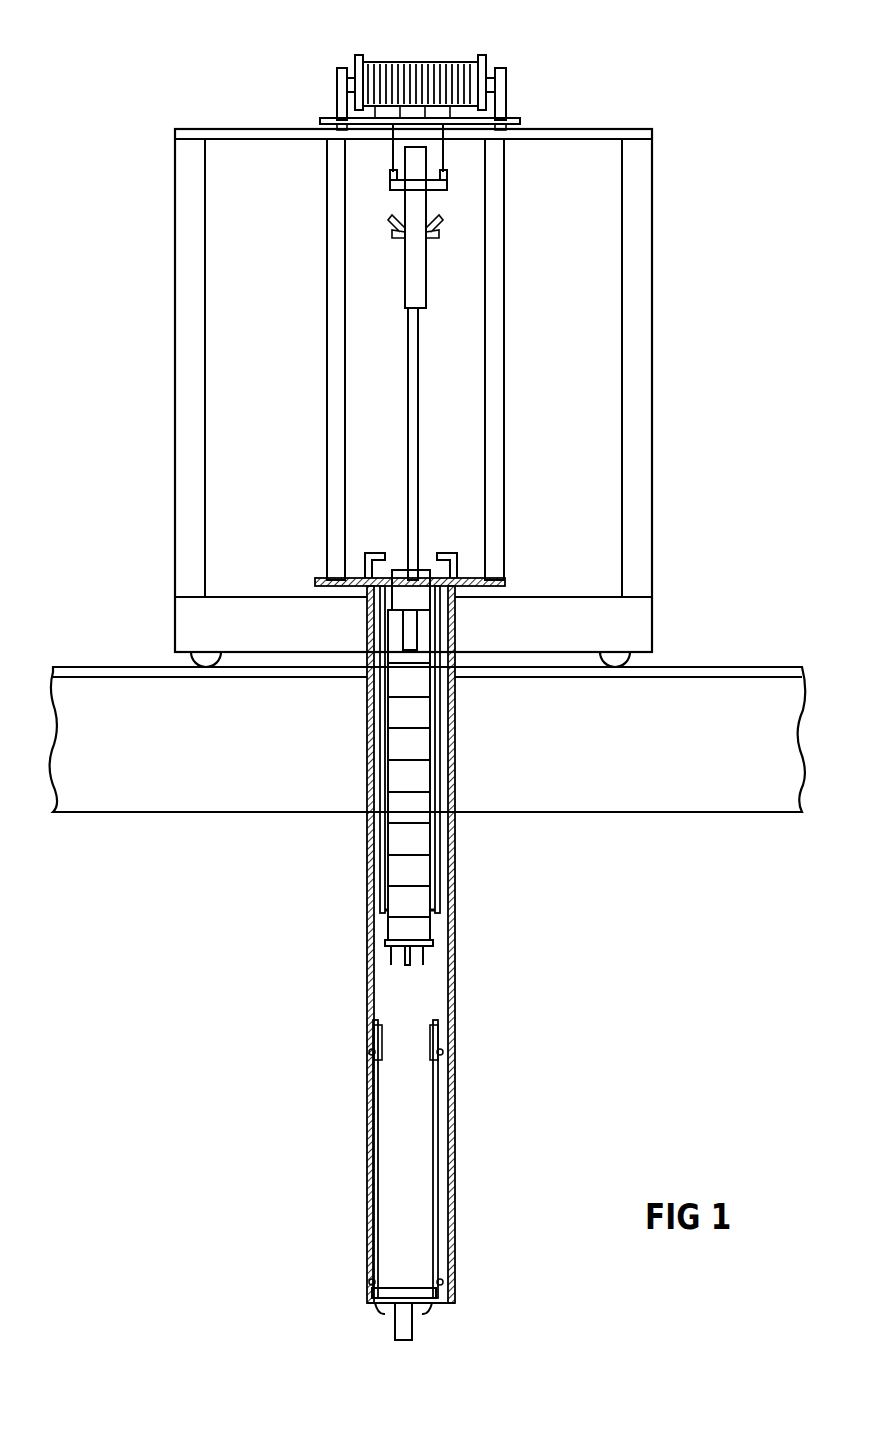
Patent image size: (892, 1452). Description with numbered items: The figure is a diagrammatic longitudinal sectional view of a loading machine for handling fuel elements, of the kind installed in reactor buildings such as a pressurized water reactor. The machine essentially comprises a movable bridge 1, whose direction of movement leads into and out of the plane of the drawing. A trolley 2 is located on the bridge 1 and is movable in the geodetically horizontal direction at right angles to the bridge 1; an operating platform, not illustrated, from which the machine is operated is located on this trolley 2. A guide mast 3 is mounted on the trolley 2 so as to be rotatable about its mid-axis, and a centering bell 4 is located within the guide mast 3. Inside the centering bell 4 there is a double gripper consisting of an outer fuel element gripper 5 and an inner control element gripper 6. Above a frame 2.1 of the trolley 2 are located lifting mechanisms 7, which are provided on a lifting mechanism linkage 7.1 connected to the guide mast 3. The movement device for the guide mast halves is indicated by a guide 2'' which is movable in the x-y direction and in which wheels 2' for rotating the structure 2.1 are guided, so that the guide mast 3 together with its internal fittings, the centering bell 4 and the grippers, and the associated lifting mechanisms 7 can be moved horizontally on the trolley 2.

The bridge 1 is at (755, 727).
The trolley 2 is at (450, 390).
The wheels 2' is at (462, 642).
The guide 2'' is at (433, 643).
The frame 2.1 is at (637, 352).
The guide mast 3 is at (452, 876).
The centering bell 4 is at (440, 1111).
The outer fuel element gripper 5 is at (440, 943).
The inner control element gripper 6 is at (413, 477).
The lifting mechanisms 7 is at (470, 77).
The lifting mechanism linkage 7.1 is at (495, 414).